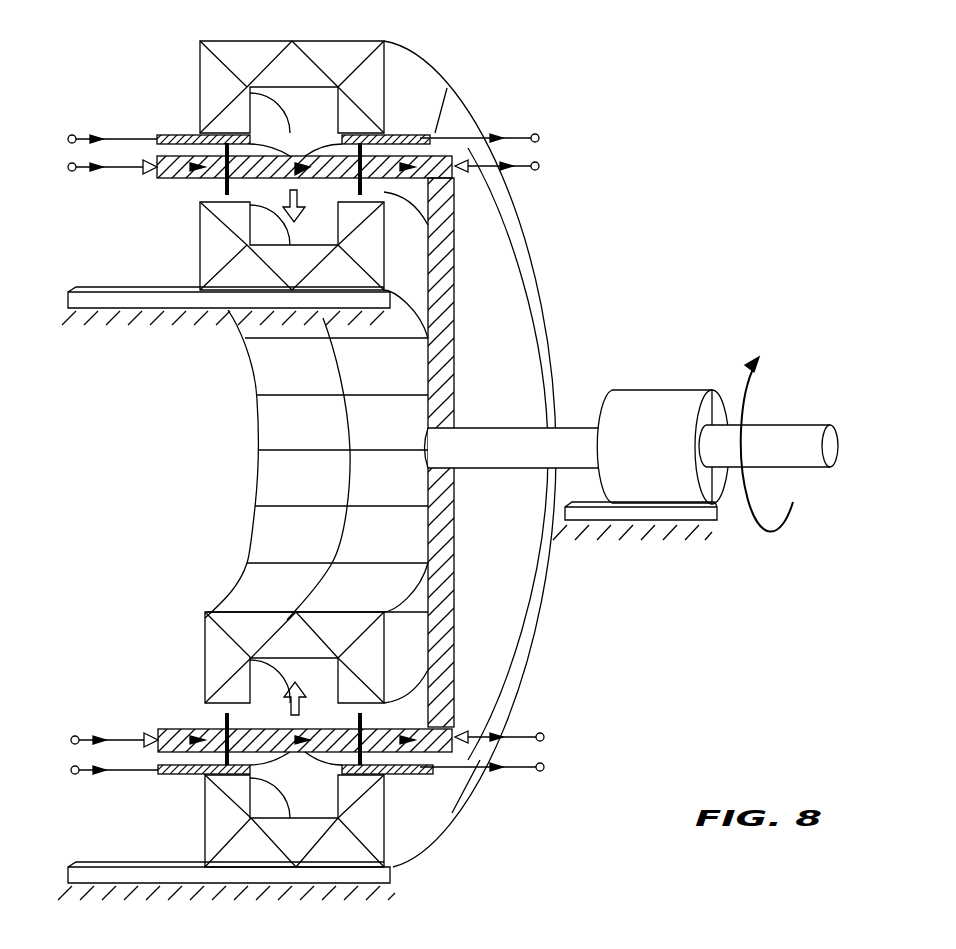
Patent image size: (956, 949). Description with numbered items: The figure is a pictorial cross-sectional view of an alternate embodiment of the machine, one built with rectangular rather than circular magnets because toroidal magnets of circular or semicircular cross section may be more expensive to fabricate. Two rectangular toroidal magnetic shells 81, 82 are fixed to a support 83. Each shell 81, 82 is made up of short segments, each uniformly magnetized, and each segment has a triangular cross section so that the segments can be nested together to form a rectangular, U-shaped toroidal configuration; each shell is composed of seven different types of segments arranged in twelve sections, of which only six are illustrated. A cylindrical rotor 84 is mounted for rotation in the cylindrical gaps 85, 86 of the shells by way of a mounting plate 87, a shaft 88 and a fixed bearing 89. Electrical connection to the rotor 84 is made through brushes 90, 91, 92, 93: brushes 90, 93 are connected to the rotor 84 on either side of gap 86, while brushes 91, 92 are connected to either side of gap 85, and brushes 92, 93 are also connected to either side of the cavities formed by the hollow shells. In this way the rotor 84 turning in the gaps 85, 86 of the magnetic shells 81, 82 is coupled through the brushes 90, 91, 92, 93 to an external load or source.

The rectangular toroidal magnetic shell 81 is at (262, 548).
The rectangular toroidal magnetic shell 82 is at (462, 788).
The support 83 is at (96, 304).
The cylindrical rotor 84 is at (185, 725).
The cylindrical gap 85 is at (205, 185).
The cylindrical gap 86 is at (455, 228).
The mounting plate 87 is at (497, 287).
The shaft 88 is at (569, 433).
The fixed bearing 89 is at (663, 407).
The brush 90 is at (500, 185).
The brush 91 is at (140, 170).
The brush 92 is at (173, 133).
The brush 93 is at (401, 130).